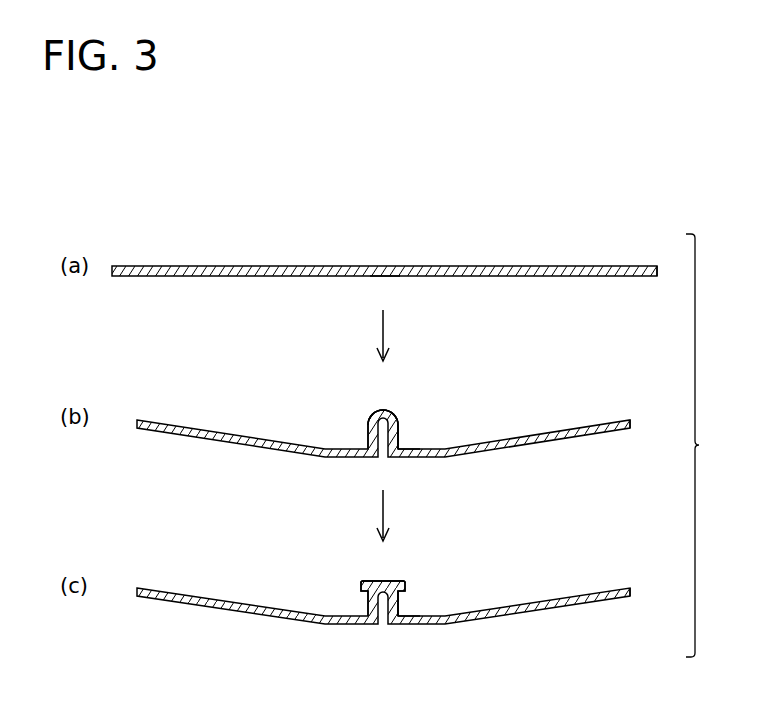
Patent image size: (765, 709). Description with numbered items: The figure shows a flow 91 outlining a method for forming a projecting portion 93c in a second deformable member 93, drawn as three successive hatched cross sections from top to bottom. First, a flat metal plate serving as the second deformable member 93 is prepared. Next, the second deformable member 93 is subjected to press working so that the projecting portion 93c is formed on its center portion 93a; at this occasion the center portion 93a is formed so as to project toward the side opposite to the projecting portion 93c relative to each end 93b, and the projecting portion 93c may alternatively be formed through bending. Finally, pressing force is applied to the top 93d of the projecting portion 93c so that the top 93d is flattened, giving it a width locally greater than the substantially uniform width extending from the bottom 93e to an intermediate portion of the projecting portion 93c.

The flow 91 is at (709, 445).
The second deformable member 93 is at (562, 277).
The center portion 93a is at (388, 277).
The end 93b is at (638, 277).
The projecting portion 93c is at (392, 425).
The top 93d is at (384, 410).
The bottom 93e is at (399, 447).